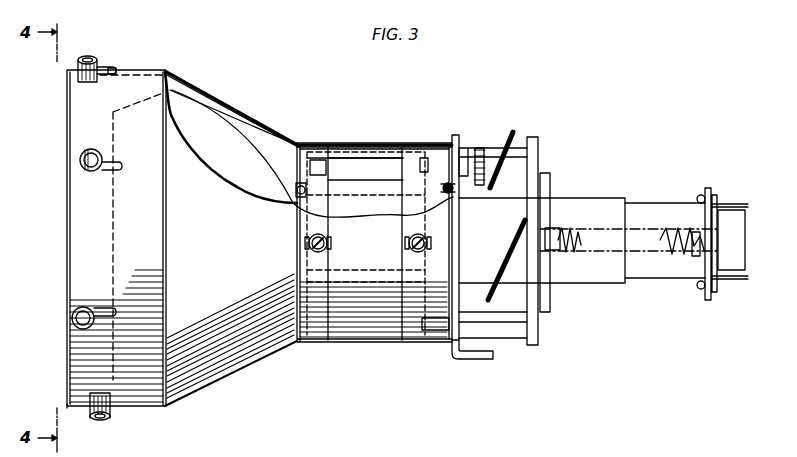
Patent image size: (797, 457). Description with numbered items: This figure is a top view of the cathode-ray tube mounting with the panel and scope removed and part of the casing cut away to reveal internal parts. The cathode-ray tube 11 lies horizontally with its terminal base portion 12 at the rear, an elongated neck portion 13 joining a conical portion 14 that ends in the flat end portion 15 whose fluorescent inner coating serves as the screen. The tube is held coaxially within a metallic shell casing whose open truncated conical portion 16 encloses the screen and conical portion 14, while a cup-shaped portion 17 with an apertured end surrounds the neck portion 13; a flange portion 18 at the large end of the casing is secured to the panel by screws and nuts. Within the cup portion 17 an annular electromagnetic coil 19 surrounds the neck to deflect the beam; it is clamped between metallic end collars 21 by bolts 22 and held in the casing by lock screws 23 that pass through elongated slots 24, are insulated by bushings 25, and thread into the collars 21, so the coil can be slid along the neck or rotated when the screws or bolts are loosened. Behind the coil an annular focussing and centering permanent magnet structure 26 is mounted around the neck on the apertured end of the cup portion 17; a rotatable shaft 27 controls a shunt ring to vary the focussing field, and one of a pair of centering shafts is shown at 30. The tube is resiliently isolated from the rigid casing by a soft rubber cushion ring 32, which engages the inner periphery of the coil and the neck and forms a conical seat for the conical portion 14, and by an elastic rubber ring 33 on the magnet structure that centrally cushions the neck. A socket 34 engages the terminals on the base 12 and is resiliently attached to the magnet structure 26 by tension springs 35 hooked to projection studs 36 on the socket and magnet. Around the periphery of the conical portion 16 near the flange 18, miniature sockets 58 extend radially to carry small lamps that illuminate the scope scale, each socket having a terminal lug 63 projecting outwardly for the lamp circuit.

The cathode-ray tube 11 is at (223, 105).
The terminal base portion 12 is at (657, 212).
The neck portion 13 is at (592, 207).
The conical portion 14 is at (244, 129).
The flat end portion 15 is at (112, 220).
The truncated conical portion 16 is at (190, 83).
The cup-shaped portion 17 is at (360, 142).
The flange portion 18 is at (68, 408).
The electromagnetic coil 19 is at (340, 163).
The end collars 21 is at (318, 167).
The bolts 22 is at (368, 180).
The lock screws 23 is at (303, 245).
The elongated slots 24 is at (306, 236).
The bushings 25 is at (312, 253).
The permanent magnet structure 26 is at (500, 251).
The rotatable shaft 27 is at (436, 160).
The rotatable shaft 30 is at (440, 325).
The cushion ring 32 is at (296, 190).
The elastic rubber ring 33 is at (548, 272).
The socket 34 is at (735, 240).
The tension springs 35 is at (670, 252).
The projection studs 36 is at (548, 235).
The miniature sockets 58 is at (80, 81).
The terminal lug 63 is at (102, 68).